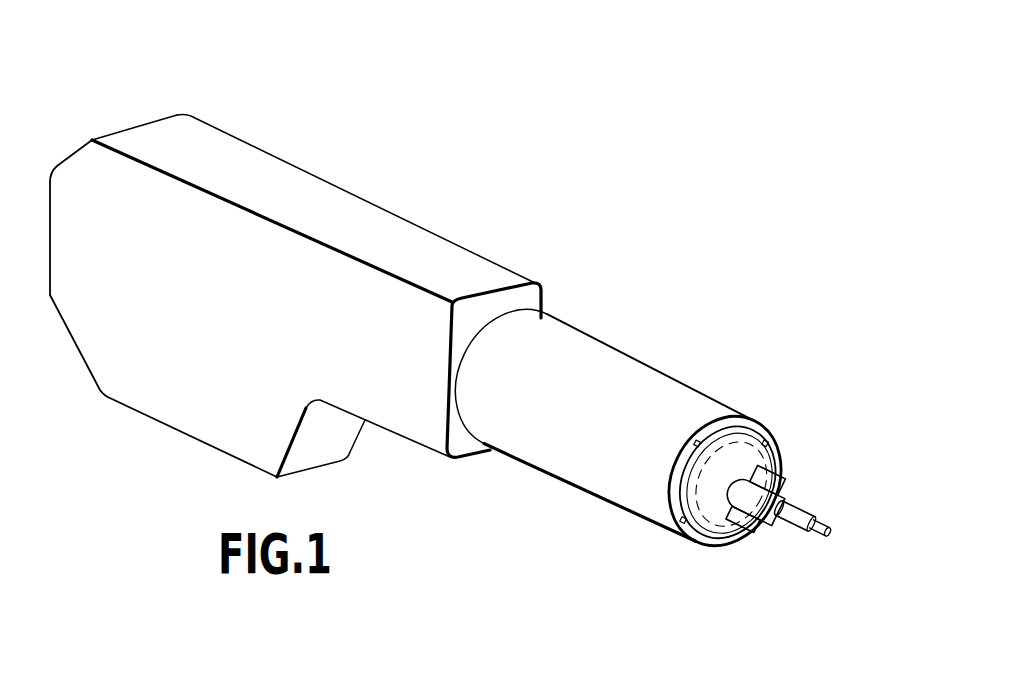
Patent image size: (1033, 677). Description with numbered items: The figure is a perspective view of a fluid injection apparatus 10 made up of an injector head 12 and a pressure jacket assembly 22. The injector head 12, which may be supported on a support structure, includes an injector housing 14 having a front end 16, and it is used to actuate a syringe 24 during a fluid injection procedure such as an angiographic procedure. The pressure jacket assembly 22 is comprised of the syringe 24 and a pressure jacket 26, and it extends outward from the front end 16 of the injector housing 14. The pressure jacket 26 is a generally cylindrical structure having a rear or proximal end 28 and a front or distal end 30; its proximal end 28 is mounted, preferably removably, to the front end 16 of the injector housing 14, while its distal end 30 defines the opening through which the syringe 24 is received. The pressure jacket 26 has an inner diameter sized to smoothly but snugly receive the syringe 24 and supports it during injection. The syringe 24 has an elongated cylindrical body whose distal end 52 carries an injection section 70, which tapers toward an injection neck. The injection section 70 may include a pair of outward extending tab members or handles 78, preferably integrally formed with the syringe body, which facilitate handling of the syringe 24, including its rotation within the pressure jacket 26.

The fluid injection apparatus 10 is at (127, 112).
The injector head 12 is at (305, 161).
The injector housing 14 is at (462, 247).
The front end 16 is at (540, 290).
The pressure jacket assembly 22 is at (668, 338).
The syringe 24 is at (703, 534).
The pressure jacket 26 is at (588, 484).
The proximal end 28 is at (512, 338).
The distal end 30 is at (768, 412).
The distal end 52 is at (835, 500).
The injection section 70 is at (808, 563).
The handles 78 is at (790, 480).